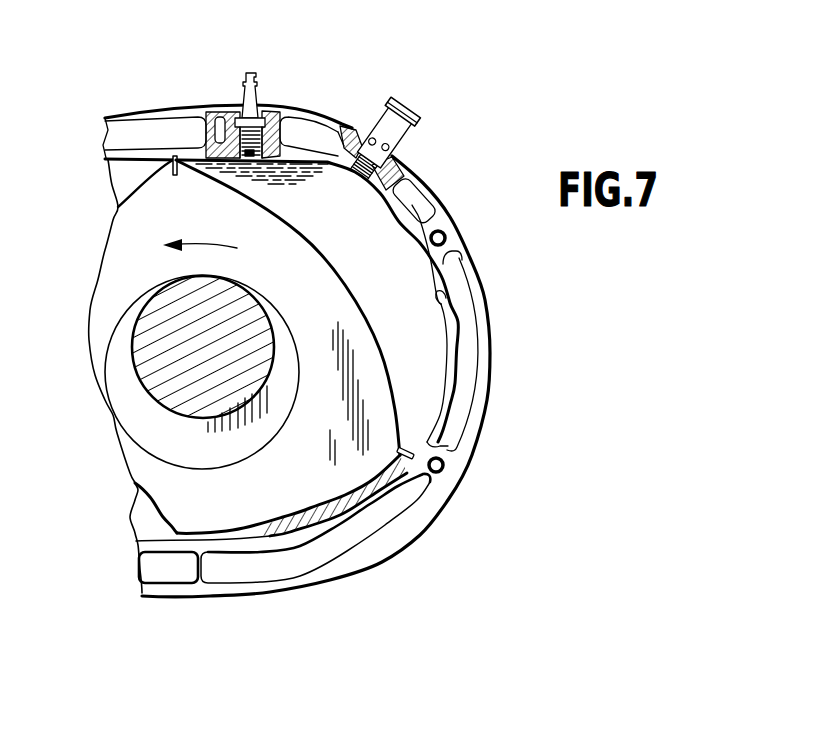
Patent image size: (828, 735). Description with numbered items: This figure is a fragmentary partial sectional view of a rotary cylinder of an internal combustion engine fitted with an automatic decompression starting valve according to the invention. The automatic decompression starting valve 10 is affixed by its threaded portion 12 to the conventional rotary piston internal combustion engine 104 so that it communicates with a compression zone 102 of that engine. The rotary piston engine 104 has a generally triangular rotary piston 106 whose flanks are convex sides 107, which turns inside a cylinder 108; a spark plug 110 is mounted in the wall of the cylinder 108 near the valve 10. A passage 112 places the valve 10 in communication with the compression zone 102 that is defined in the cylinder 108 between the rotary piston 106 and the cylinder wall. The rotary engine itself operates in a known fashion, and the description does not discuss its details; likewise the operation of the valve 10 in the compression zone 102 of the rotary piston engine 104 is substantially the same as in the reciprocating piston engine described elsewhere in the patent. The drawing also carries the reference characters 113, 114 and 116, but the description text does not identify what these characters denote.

The automatic decompression starting valve 10 is at (381, 108).
The threaded portion 12 is at (336, 128).
The compression zone 102 is at (330, 238).
The rotary piston internal combustion engine 104 is at (496, 306).
The rotary piston 106 is at (383, 404).
The convex sides 107 is at (385, 360).
The cylinder 108 is at (290, 203).
The spark plug 110 is at (241, 100).
The passage 112 is at (358, 166).
The apex seal 113 is at (450, 447).
The port notch 114 is at (444, 302).
The rotation direction arrow 116 is at (208, 242).